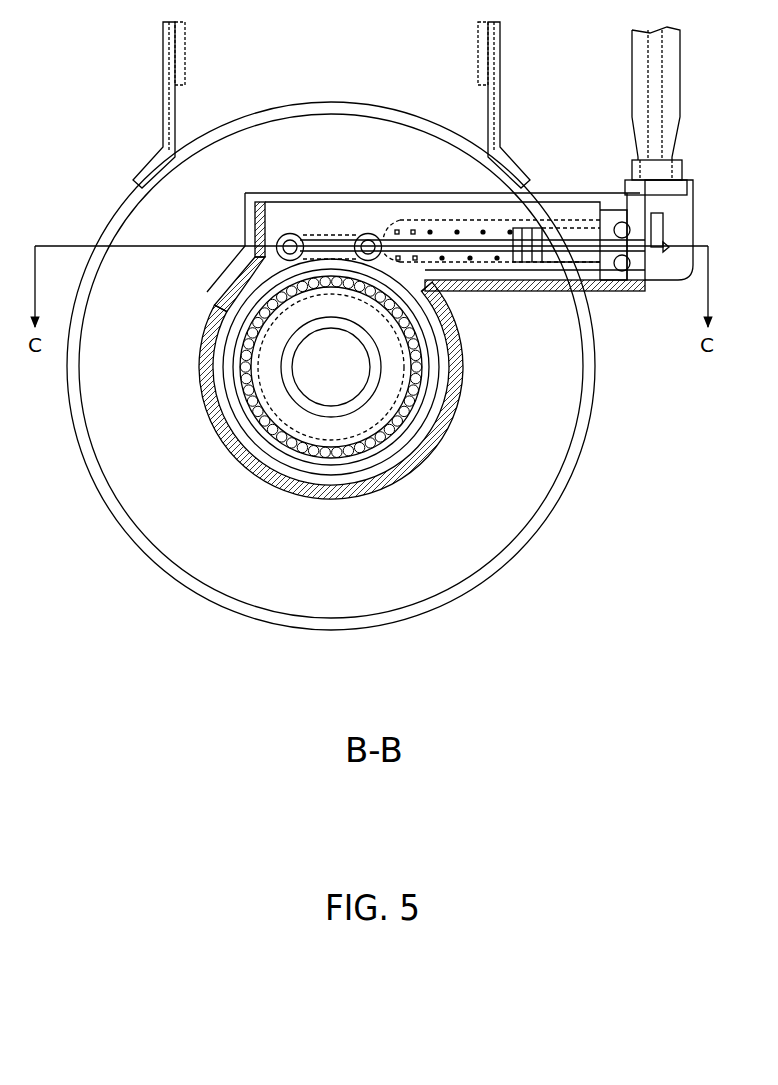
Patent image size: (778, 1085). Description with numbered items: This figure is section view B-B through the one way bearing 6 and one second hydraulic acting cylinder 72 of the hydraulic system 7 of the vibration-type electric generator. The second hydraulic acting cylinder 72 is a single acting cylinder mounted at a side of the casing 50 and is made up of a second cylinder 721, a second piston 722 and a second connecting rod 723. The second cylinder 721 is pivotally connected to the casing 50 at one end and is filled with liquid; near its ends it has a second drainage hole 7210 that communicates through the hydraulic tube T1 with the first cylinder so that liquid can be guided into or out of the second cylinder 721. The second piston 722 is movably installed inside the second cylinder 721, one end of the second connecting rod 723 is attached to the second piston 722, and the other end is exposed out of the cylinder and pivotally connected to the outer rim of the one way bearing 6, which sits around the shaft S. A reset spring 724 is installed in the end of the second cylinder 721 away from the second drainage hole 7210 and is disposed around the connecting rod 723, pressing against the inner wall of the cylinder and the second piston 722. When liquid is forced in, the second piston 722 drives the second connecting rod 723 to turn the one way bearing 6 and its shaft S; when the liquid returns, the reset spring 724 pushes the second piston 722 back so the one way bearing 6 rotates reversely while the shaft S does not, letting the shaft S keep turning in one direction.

The hydraulic system 7 is at (607, 78).
The hydraulic tube T1 is at (672, 76).
The second connecting rod 723 is at (398, 217).
The second cylinder 721 is at (430, 220).
The second piston 722 is at (565, 212).
The second hydraulic acting cylinder 72 is at (575, 197).
The one way bearing 6 is at (276, 266).
The reset spring 724 is at (510, 262).
The second drainage hole 7210 is at (590, 291).
The casing 50 is at (104, 505).
The shaft S is at (322, 388).